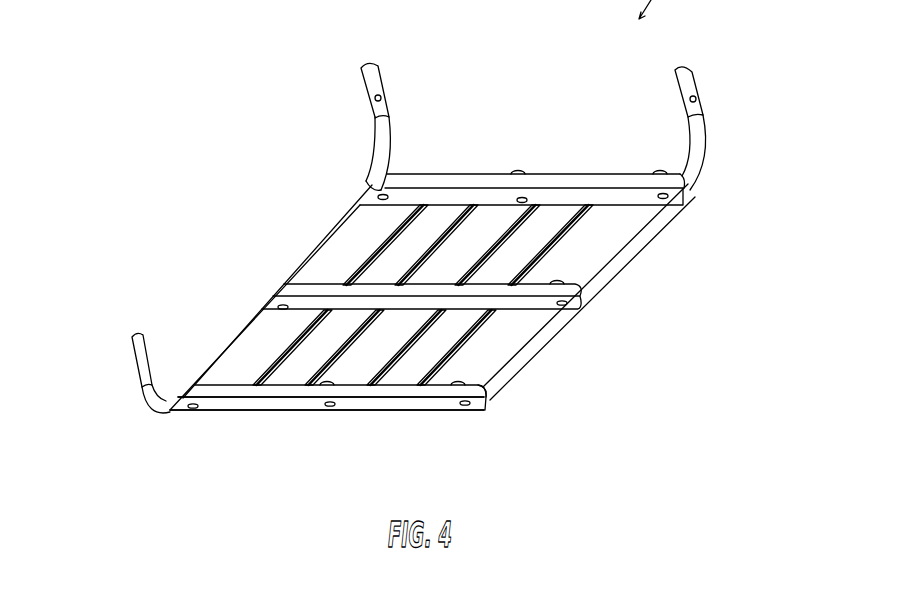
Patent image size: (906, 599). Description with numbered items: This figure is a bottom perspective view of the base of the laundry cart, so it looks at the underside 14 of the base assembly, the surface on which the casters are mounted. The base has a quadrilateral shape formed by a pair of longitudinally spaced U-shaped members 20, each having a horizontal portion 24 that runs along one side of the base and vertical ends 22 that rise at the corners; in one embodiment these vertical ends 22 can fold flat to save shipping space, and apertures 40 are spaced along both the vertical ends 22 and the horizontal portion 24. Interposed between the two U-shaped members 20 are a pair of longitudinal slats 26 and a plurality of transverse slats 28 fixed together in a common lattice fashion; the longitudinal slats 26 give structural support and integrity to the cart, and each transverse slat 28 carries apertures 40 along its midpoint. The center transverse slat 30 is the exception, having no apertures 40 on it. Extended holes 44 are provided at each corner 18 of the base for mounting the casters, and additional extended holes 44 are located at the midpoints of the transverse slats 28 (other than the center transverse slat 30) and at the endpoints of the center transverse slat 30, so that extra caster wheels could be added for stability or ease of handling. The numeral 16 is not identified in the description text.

The underside 14 is at (415, 247).
The frame rail 16 is at (475, 173).
The corner 18 is at (382, 148).
The U-shaped member 20 is at (227, 336).
The vertical end 22 is at (373, 72).
The horizontal portion 24 is at (240, 320).
The longitudinal slat 26 is at (383, 241).
The transverse slat 28 is at (237, 400).
The center transverse slat 30 is at (427, 300).
The aperture 40 is at (362, 65).
The extended hole 44 is at (189, 412).